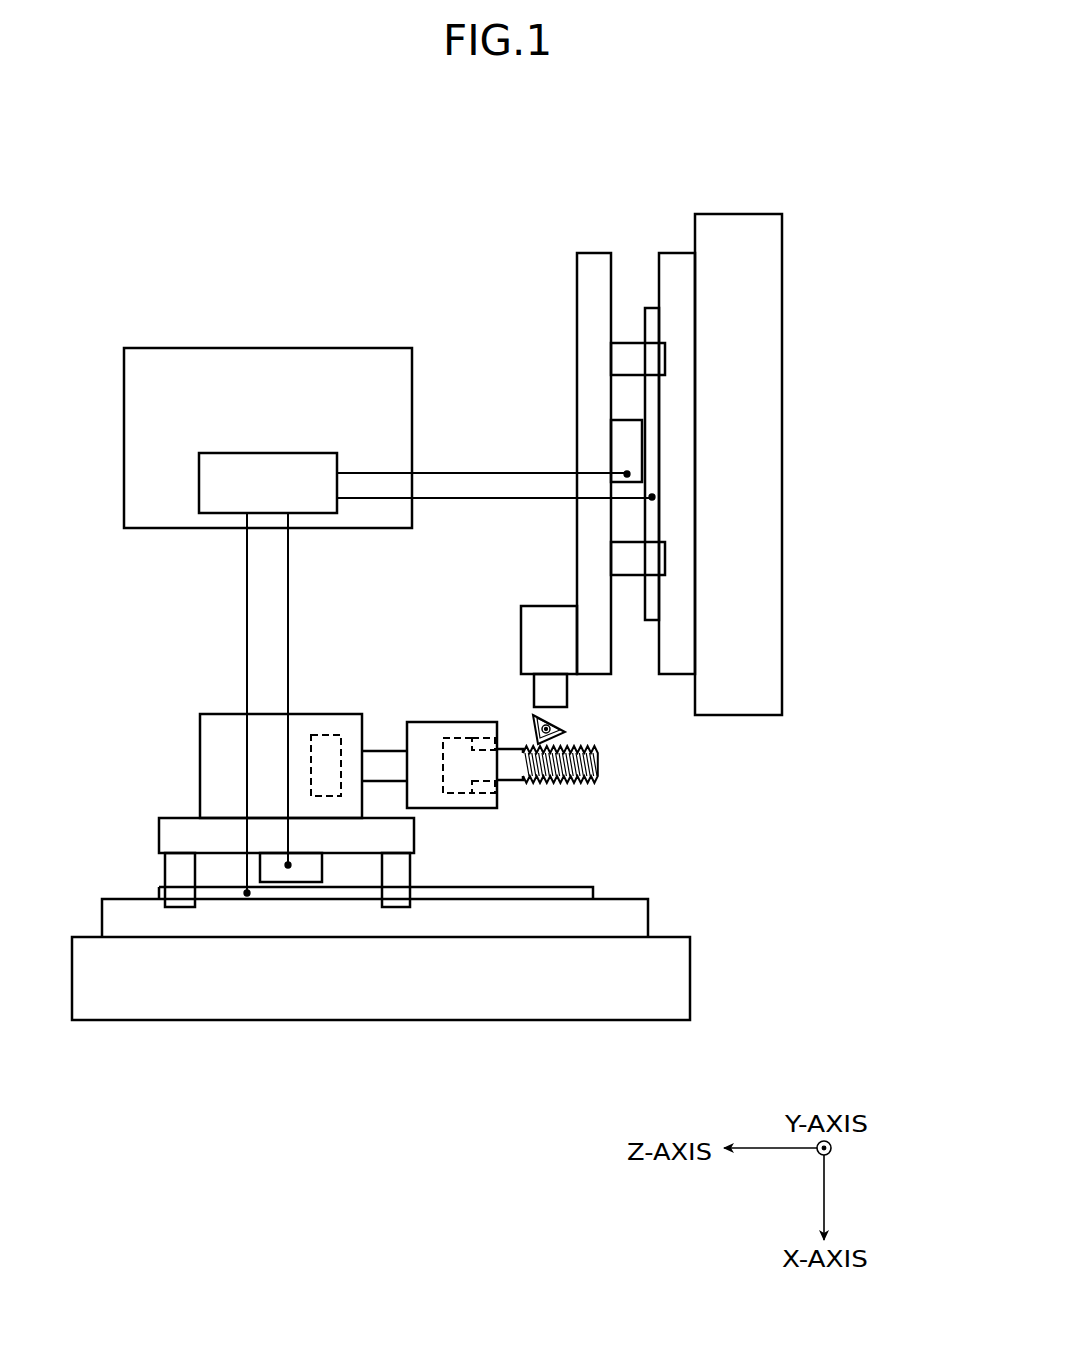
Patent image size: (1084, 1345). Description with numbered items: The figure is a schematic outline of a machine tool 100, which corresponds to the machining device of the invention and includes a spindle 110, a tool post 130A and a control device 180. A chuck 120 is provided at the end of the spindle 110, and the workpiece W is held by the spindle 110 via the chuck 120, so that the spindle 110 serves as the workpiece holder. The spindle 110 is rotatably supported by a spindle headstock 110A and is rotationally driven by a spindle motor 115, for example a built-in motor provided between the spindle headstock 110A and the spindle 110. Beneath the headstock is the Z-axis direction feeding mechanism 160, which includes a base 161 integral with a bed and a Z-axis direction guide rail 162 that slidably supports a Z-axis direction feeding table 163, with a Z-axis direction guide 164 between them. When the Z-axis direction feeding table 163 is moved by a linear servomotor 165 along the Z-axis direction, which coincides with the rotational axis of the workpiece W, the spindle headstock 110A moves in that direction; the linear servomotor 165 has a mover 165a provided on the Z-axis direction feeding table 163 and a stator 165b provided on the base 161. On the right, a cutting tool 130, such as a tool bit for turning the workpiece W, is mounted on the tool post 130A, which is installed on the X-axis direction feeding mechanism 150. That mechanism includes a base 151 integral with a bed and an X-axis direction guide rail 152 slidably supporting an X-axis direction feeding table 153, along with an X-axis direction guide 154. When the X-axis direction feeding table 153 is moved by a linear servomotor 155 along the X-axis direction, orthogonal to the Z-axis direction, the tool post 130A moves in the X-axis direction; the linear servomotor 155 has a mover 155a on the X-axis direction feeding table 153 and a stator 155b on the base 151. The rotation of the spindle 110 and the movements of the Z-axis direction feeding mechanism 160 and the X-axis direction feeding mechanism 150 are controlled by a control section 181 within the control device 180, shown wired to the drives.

The machine tool 100 is at (198, 250).
The spindle 110 is at (380, 760).
The spindle headstock 110A is at (211, 728).
The spindle motor 115 is at (325, 734).
The chuck 120 is at (448, 730).
The cutting tool 130 is at (550, 698).
The tool post 130A is at (548, 620).
The X-axis direction feeding mechanism 150 is at (776, 128).
The base 151 is at (752, 222).
The X-axis direction guide rail 152 is at (676, 262).
The X-axis direction feeding table 153 is at (590, 327).
The X-axis direction guide 154 is at (628, 355).
The linear servomotor 155 is at (860, 312).
The mover 155a is at (627, 432).
The stator 155b is at (652, 458).
The Z-axis direction feeding mechanism 160 is at (147, 1080).
The base 161 is at (540, 1000).
The Z-axis direction guide rail 162 is at (642, 917).
The Z-axis direction feeding table 163 is at (185, 826).
The Z-axis direction guide 164 is at (176, 878).
The linear servomotor 165 is at (447, 1068).
The mover 165a is at (300, 878).
The stator 165b is at (363, 895).
The control device 180 is at (302, 347).
The control section 181 is at (275, 452).
The workpiece W is at (546, 784).